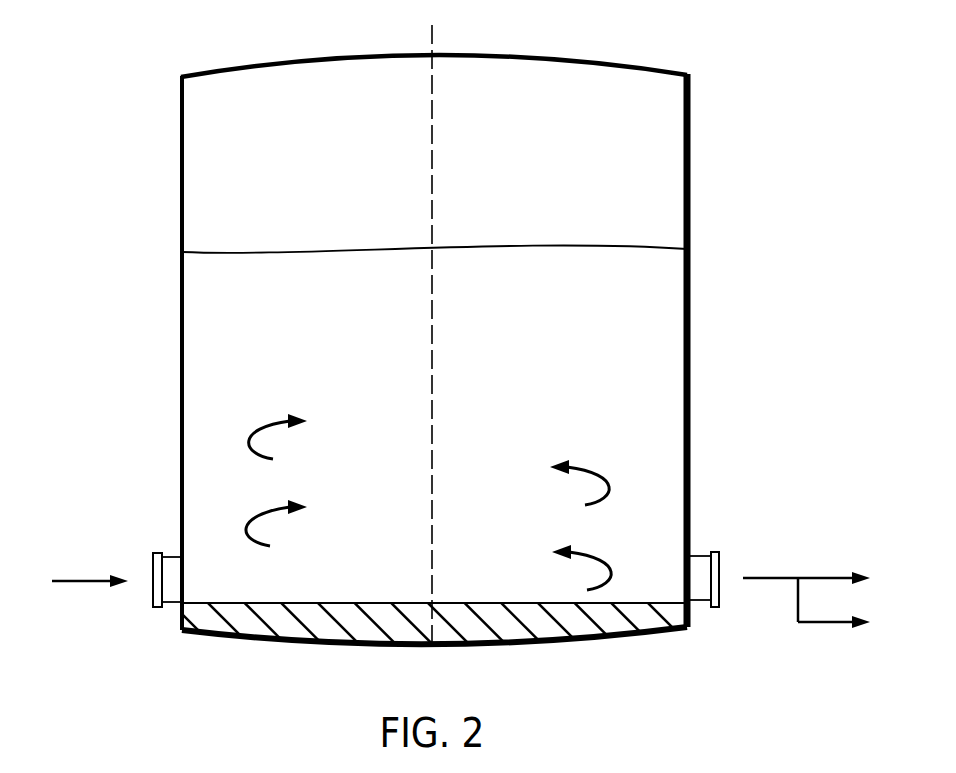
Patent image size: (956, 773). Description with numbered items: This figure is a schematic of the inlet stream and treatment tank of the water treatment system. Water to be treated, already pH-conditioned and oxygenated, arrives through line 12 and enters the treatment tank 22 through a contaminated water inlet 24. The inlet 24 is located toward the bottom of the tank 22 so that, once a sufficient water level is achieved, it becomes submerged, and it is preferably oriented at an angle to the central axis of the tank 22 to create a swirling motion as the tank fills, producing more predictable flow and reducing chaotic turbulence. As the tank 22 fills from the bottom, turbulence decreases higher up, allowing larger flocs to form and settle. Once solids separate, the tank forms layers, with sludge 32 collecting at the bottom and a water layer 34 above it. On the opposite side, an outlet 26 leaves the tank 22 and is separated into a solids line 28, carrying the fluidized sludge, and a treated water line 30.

The line 12 is at (73, 582).
The treatment tank 22 is at (182, 150).
The contaminated water inlet 24 is at (155, 608).
The outlet 26 is at (708, 601).
The solids line 28 is at (825, 625).
The treated water line 30 is at (833, 572).
The sludge 32 is at (285, 618).
The water layer 34 is at (222, 347).